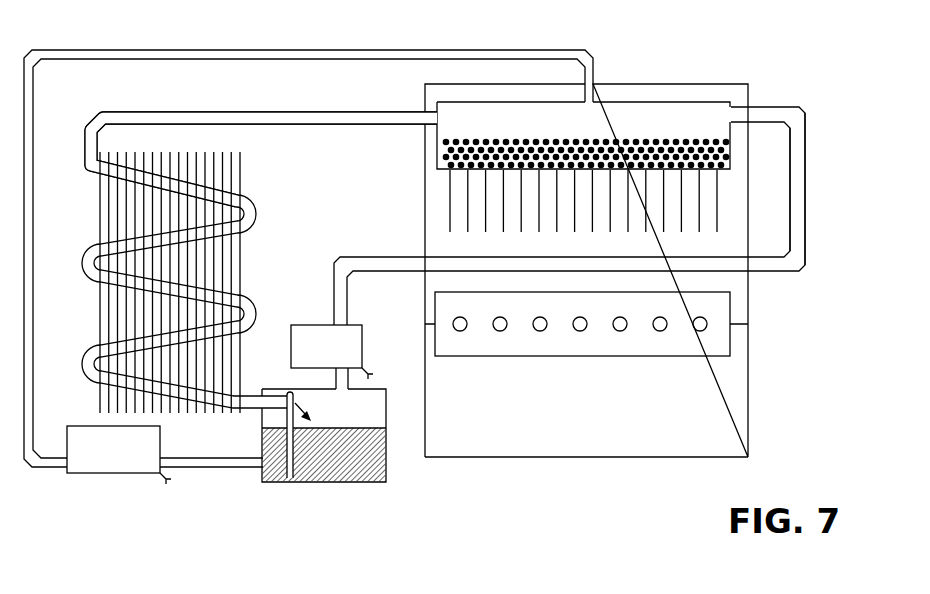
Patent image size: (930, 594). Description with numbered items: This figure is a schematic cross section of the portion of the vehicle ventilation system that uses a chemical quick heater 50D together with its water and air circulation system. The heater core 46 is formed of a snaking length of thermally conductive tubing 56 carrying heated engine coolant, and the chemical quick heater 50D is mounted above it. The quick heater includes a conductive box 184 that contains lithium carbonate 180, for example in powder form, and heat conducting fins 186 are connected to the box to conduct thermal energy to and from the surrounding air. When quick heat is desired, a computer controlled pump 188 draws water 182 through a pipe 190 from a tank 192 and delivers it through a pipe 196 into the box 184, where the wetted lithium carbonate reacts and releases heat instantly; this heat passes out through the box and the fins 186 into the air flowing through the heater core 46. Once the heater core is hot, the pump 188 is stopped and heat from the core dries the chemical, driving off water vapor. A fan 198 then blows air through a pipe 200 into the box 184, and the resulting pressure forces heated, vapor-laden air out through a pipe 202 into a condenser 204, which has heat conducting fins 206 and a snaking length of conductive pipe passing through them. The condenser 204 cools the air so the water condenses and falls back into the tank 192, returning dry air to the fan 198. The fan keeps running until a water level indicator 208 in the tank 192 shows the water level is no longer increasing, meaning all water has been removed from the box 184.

The heater core 46 is at (604, 394).
The chemical quick heater 50D is at (611, 85).
The thermally conductive tubing 56 is at (534, 330).
The lithium carbonate 180 is at (620, 133).
The water 182 is at (325, 428).
The conductive box 184 is at (680, 103).
The heat conducting fins 186 is at (450, 220).
The pump 188 is at (90, 424).
The pipe 190 is at (205, 468).
The tank 192 is at (307, 388).
The pipe 196 is at (307, 50).
The fan 198 is at (310, 323).
The pipe 200 is at (806, 192).
The pipe 202 is at (296, 111).
The condenser 204 is at (262, 279).
The heat conducting fins 206 is at (238, 270).
The water level indicator 208 is at (256, 215).